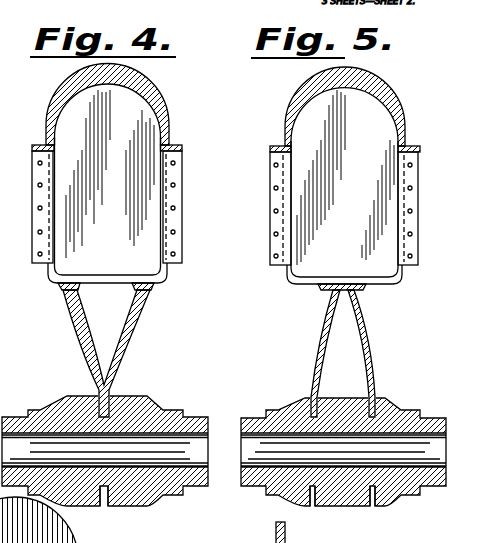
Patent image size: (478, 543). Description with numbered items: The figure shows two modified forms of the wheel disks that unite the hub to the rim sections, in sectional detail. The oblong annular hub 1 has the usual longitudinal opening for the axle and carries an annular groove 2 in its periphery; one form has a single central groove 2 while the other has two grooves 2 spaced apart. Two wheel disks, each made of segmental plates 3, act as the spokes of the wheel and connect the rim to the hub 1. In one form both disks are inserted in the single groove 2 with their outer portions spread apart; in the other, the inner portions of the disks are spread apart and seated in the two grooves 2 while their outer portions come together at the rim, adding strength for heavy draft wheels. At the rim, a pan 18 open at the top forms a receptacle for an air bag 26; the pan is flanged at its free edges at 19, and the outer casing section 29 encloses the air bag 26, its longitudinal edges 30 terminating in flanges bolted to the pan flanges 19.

In FIG. 4, the hub 1 is at (150, 418).
In FIG. 5, the hub 1 is at (389, 413).
In FIG. 4, the annular groove 2 is at (104, 508).
In FIG. 5, the annular groove 2 is at (313, 508).
In FIG. 4, the segmental plate 3 is at (100, 342).
In FIG. 5, the segmental plate 3 is at (368, 358).
In FIG. 4, the pan 18 is at (117, 281).
In FIG. 5, the pan 18 is at (319, 286).
In FIG. 4, the flange 19 is at (183, 219).
In FIG. 5, the flange 19 is at (274, 220).
In FIG. 4, the air bag 26 is at (107, 186).
In FIG. 5, the air bag 26 is at (344, 187).
In FIG. 4, the outer casing section 29 is at (155, 84).
In FIG. 5, the outer casing section 29 is at (368, 88).
In FIG. 4, the longitudinal edge 30 is at (0, 133).
In FIG. 5, the longitudinal edge 30 is at (272, 148).